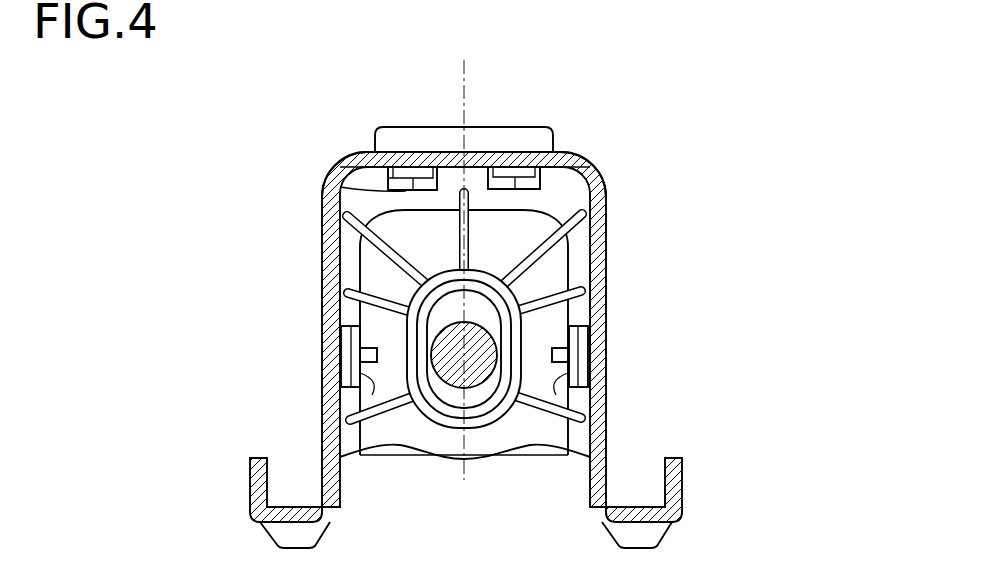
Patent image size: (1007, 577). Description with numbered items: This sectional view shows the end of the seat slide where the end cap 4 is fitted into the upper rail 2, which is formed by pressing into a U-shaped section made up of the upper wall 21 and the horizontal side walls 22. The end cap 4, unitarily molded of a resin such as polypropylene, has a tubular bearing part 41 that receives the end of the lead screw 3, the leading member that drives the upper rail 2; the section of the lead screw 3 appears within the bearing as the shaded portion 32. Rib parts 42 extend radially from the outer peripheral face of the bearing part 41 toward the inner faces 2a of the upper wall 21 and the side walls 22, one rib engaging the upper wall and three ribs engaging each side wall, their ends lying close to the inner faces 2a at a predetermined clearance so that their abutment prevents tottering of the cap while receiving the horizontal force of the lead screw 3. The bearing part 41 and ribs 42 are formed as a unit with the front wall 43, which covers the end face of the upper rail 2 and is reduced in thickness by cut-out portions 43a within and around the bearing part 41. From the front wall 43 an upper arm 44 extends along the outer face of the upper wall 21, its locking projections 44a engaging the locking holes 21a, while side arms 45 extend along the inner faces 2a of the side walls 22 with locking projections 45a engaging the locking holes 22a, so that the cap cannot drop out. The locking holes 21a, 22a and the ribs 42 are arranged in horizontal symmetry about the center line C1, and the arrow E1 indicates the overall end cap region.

The upper rail 2 is at (613, 448).
The inner face of upper rail 2a is at (347, 163).
The upper wall 21 is at (452, 152).
The locking hole 21a is at (420, 166).
The horizontal side wall 22 is at (322, 272).
The locking hole 22a is at (322, 338).
The lead screw 3 is at (430, 415).
The shaft 32 is at (456, 388).
The end cap 4 is at (553, 124).
The tubular bearing part 41 is at (483, 428).
The rib part 42 is at (572, 262).
The front wall 43 is at (490, 301).
The cut-out portion 43a is at (387, 420).
The upper arm 44 is at (473, 127).
The locking projection 44a is at (340, 187).
The side arm 45 is at (348, 390).
The locking projection 45a is at (322, 372).
The center line C1 is at (464, 62).
The elastic member E1 is at (674, 134).